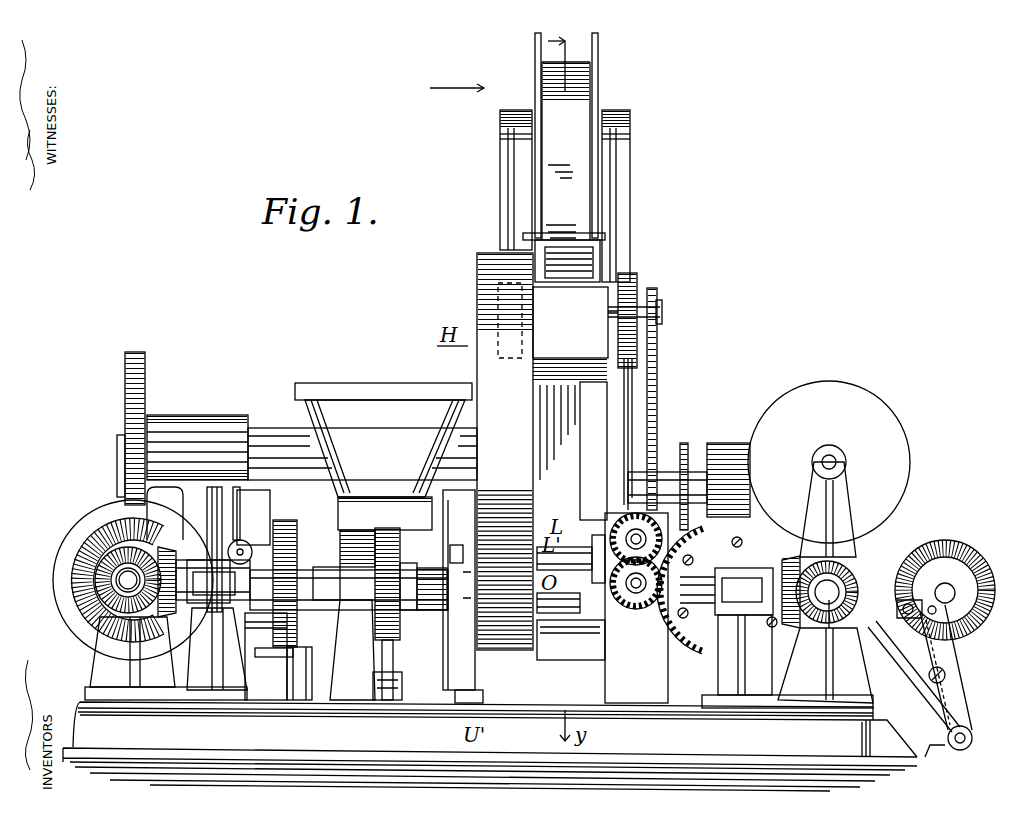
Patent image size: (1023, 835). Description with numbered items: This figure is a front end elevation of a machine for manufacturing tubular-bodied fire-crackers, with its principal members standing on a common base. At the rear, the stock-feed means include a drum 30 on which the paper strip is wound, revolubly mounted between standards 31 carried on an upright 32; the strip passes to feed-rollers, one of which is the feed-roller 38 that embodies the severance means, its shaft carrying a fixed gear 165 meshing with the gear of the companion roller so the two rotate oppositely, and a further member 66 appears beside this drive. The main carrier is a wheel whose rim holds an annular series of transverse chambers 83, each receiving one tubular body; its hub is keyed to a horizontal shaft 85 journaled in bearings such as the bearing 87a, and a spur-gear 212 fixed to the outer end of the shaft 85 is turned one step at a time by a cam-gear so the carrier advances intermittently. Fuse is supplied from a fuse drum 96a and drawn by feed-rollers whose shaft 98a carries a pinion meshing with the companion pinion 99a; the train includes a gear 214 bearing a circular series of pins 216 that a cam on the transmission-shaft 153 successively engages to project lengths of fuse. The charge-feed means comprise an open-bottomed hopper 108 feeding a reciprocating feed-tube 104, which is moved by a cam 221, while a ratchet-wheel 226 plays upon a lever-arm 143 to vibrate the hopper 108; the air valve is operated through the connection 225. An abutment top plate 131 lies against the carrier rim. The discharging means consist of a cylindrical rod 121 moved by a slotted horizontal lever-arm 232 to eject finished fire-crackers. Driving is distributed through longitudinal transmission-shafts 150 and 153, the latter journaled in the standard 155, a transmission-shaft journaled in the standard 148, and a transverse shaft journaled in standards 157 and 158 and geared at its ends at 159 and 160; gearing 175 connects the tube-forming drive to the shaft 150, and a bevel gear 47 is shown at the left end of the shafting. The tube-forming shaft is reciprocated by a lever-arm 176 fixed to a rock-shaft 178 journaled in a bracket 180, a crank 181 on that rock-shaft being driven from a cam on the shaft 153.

The drum 30 is at (600, 91).
The standards 31 is at (507, 190).
The upright 32 is at (603, 280).
The fixed gear 165 is at (631, 289).
The feed-roller 38 is at (662, 325).
The vertical rod 66 is at (658, 429).
The fuse drum 96a is at (865, 406).
The spur-gear 212 is at (146, 374).
The horizontal shaft 85 is at (270, 430).
The powder reservoir or hopper 108 is at (383, 472).
The transverse bores or chambers 83 is at (554, 451).
The shaft 98a is at (618, 525).
The laterally-projecting pins 216 is at (694, 560).
The longitudinal transmission-shaft 153 is at (860, 556).
The gearing 175 is at (940, 546).
The longitudinal transmission-shaft 150 is at (941, 593).
The cam 221 is at (72, 538).
The bevel gear 47 is at (130, 580).
The bearing 87a is at (232, 513).
The feed-tube 104 is at (317, 546).
The standard 148 is at (110, 657).
The gearing 159 is at (157, 622).
The standard 157 is at (240, 672).
The reciprocating cylindrical rod 121 is at (568, 703).
The operative connection 225 is at (313, 652).
The horizontal lever-arm 232 is at (312, 671).
The ratchet-wheel 226 is at (377, 615).
The lever-arm 143 is at (391, 642).
The top plate 131 is at (475, 669).
The gear 99a is at (636, 594).
The gear 214 is at (694, 645).
The gearing 160 is at (814, 625).
The standard 155 is at (843, 671).
The standard 158 is at (757, 700).
The lever-arm 176 is at (950, 650).
The crank 181 is at (955, 702).
The bracket 180 is at (928, 750).
The rock-shaft 178 is at (975, 754).